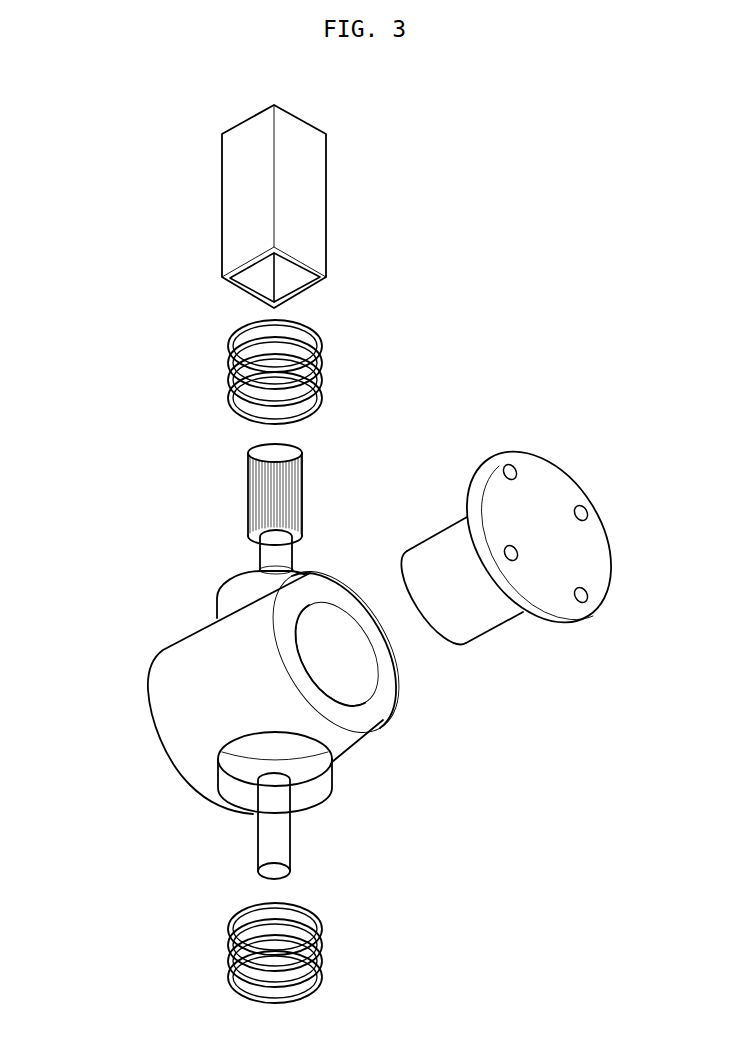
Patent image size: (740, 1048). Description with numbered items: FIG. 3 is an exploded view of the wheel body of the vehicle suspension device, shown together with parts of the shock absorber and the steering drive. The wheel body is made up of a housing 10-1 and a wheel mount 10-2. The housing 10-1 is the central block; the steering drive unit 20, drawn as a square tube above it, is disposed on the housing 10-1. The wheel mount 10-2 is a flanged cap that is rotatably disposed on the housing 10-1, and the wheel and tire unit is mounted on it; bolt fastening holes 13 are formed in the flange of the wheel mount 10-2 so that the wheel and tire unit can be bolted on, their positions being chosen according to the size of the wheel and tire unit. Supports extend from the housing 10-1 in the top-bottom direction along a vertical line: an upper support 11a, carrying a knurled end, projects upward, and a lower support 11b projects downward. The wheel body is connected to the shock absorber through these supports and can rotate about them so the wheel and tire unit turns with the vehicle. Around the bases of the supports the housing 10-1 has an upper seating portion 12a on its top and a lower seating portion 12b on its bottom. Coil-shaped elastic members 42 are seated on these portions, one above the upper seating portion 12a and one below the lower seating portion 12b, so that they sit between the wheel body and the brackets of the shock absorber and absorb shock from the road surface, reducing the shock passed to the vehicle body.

The steering drive unit 20 is at (318, 187).
The elastic members 42 is at (322, 360).
The housing 10-1 is at (177, 707).
The wheel mount 10-2 is at (540, 480).
The upper support 11a is at (267, 557).
The lower support 11b is at (282, 833).
The upper seating portion 12a is at (230, 594).
The lower seating portion 12b is at (238, 787).
The bolt fastening holes 13 is at (587, 597).